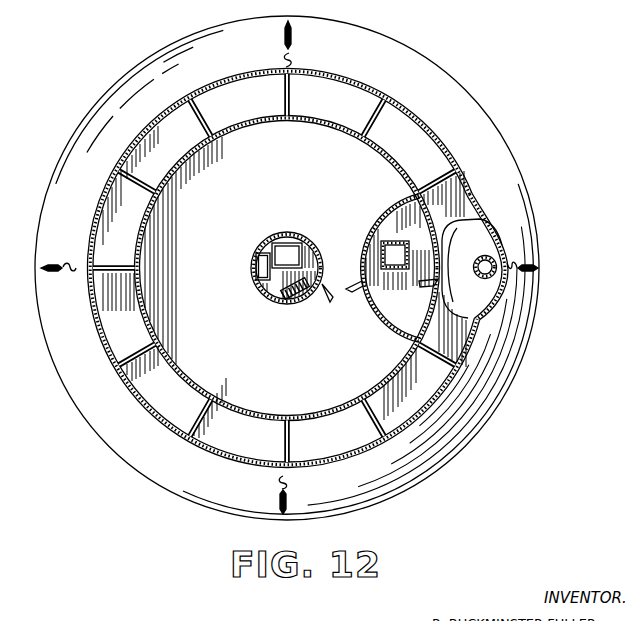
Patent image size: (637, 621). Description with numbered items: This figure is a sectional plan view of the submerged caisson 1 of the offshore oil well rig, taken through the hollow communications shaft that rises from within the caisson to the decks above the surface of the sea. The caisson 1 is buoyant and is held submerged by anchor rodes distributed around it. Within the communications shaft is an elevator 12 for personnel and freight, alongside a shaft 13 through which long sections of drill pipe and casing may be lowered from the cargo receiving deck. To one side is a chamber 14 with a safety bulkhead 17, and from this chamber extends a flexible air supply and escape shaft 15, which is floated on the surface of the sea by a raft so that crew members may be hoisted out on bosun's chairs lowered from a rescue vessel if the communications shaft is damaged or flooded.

The caisson 1 is at (527, 297).
The elevator 12 is at (281, 248).
The shaft 13 is at (259, 263).
The chamber 14 is at (476, 239).
The flexible air supply and escape shaft 15 is at (485, 256).
The safety bulkhead 17 is at (387, 241).